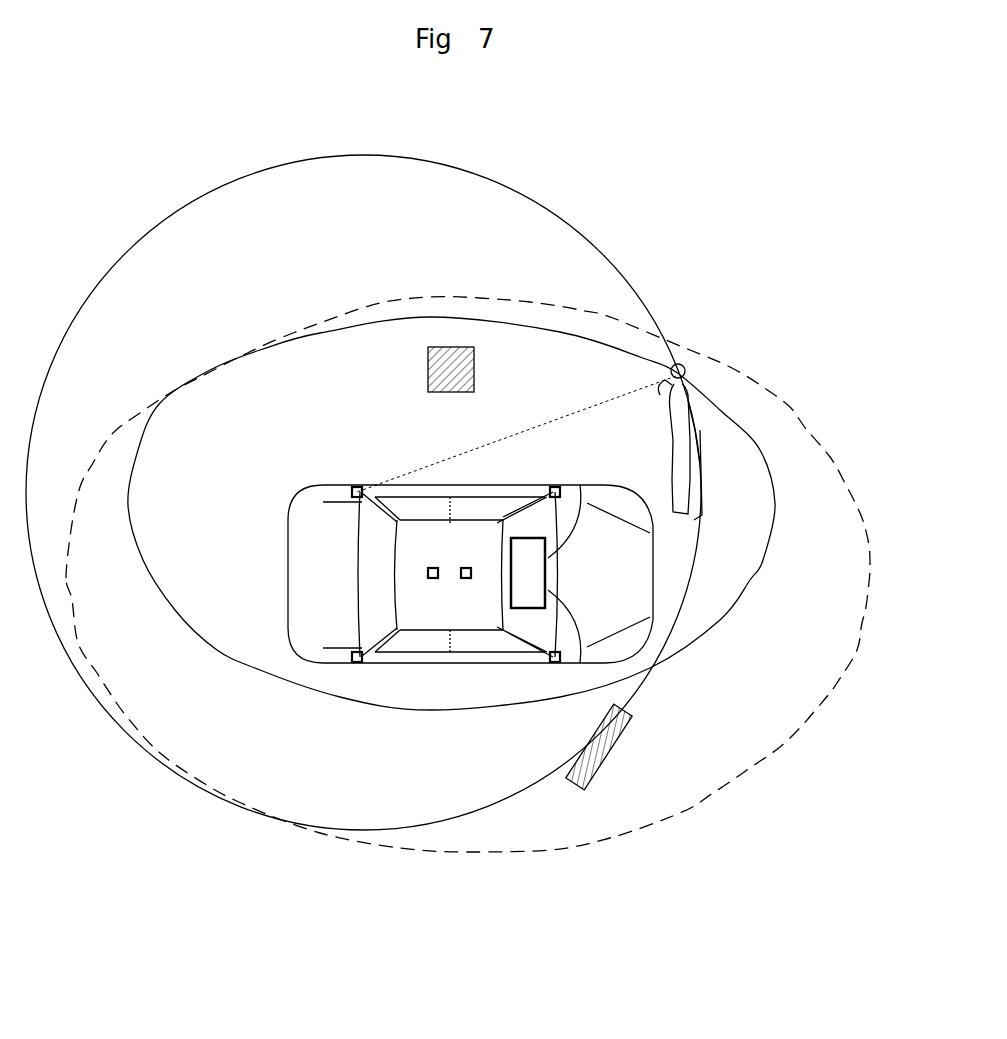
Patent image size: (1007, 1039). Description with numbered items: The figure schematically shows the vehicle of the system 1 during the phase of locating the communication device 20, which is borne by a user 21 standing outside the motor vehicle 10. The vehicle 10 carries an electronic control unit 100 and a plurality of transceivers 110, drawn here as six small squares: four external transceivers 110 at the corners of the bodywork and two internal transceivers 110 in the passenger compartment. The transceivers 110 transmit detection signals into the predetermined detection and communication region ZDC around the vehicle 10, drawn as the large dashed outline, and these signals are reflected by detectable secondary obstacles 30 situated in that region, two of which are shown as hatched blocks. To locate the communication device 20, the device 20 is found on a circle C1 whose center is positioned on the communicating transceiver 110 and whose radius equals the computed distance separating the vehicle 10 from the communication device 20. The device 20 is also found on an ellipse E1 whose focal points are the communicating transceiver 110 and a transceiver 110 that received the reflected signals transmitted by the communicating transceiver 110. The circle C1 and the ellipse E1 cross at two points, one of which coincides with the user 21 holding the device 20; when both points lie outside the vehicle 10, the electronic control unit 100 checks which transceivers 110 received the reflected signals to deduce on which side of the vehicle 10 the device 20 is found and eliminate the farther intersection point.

The system 1 is at (797, 350).
The motor vehicle 10 is at (288, 571).
The communication device 20 is at (686, 368).
The user 21 is at (702, 468).
The obstacle 30 is at (428, 360).
The electronic control unit 100 is at (548, 538).
The transceivers 110 is at (358, 487).
The circle C1 is at (530, 190).
The predetermined detection and communication region ZDC is at (252, 340).
The ellipse E1 is at (221, 652).